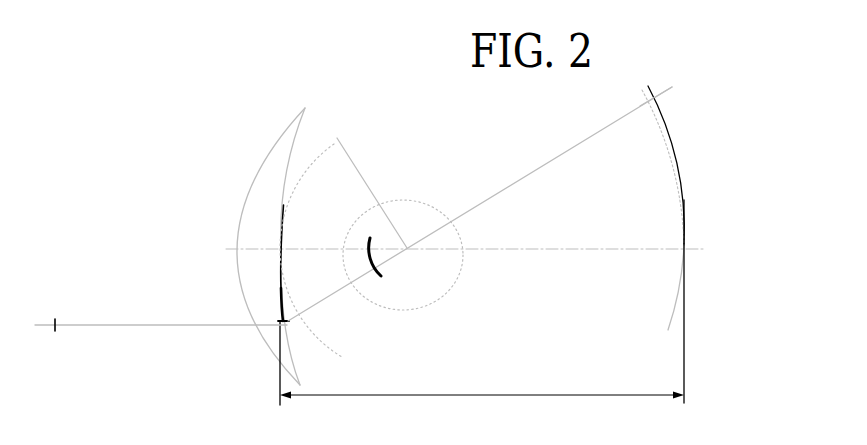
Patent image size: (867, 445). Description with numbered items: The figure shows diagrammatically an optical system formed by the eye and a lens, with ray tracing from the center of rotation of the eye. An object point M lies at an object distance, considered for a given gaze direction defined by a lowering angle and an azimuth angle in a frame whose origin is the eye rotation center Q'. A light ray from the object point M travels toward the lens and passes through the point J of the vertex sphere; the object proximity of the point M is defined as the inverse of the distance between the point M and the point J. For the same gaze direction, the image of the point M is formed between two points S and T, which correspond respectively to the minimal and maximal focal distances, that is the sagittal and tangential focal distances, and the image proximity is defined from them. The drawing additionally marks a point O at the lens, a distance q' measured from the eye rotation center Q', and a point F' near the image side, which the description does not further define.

The lens vertex / lens O is at (271, 256).
The object point M is at (161, 340).
The point of the vertex sphere J is at (480, 214).
The eye rotation center Q' is at (403, 255).
The radius q' is at (343, 247).
The point of minimal focal distance S is at (663, 195).
The point of maximal focal distance T is at (641, 96).
The focal point F' is at (670, 301).